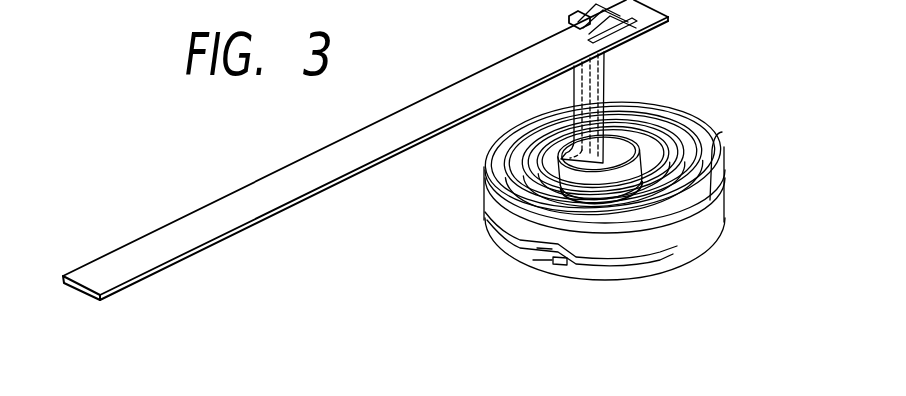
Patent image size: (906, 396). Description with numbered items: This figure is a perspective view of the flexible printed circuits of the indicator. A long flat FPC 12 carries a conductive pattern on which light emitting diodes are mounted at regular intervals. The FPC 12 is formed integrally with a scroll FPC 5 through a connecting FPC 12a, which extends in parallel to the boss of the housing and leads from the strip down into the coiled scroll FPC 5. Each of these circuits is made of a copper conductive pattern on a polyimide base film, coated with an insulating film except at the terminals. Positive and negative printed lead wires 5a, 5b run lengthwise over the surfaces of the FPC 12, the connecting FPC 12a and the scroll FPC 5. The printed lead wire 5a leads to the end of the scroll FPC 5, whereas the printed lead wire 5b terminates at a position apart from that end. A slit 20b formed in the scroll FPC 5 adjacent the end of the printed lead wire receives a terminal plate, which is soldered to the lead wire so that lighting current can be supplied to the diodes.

The FPC 12 is at (358, 157).
The connecting FPC 12a is at (606, 96).
The scroll FPC 5 is at (727, 150).
The printed lead wire 5a is at (673, 248).
The printed lead wire 5b is at (518, 250).
The slit 20b is at (566, 263).